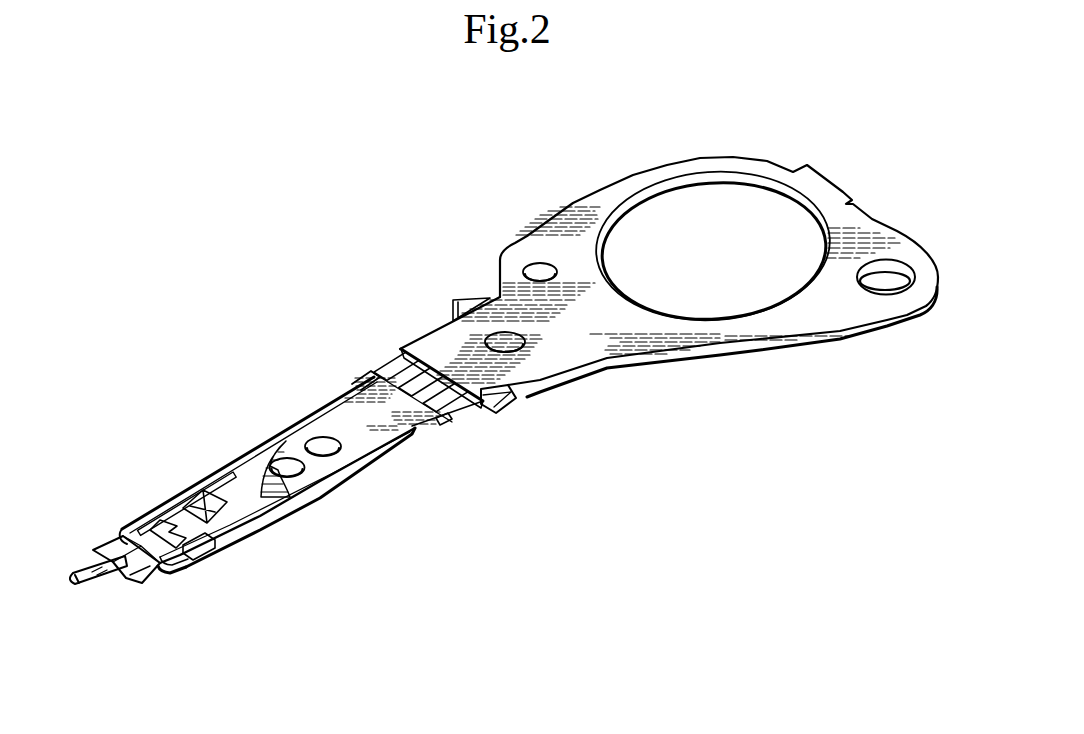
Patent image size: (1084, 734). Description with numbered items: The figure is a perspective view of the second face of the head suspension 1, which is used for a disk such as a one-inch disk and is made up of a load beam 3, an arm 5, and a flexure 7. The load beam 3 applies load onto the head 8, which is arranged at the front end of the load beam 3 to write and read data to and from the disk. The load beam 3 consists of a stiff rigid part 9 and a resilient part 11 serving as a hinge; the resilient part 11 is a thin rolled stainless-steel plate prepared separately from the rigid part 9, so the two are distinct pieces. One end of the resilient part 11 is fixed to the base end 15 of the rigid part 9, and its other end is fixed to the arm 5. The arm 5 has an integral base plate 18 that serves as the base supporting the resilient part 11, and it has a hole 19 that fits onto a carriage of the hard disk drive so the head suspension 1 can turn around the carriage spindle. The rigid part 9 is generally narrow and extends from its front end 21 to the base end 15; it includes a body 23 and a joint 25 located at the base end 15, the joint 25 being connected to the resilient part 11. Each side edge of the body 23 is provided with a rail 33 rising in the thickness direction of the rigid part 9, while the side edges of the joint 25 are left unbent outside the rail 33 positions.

The head suspension 1 is at (381, 260).
The load beam 3 is at (261, 431).
The arm 5 is at (620, 162).
The flexure 7 is at (288, 533).
The head 8 is at (145, 489).
The rigid part 9 is at (292, 433).
The resilient part 11 is at (383, 359).
The base end 15 is at (404, 456).
The base plate 18 is at (453, 347).
The hole 19 is at (712, 188).
The front end 21 is at (237, 564).
The body 23 is at (340, 430).
The joint 25 is at (420, 425).
The rail 33 is at (284, 443).